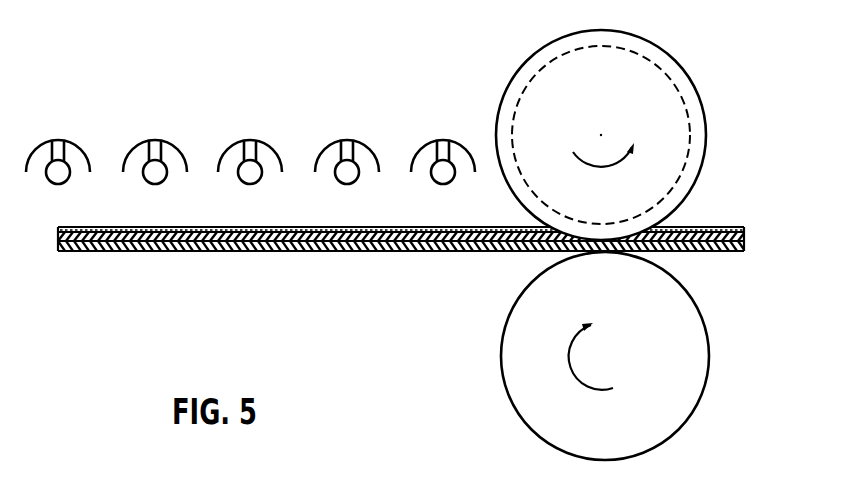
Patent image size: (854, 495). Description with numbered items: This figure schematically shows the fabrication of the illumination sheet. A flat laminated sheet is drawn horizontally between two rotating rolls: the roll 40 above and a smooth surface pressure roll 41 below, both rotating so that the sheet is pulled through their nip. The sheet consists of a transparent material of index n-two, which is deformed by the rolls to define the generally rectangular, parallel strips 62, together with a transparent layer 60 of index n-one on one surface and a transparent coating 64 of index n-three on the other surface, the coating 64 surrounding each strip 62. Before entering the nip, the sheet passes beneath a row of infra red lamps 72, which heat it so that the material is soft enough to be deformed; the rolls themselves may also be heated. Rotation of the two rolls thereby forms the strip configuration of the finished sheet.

The roll 40 is at (703, 91).
The lower pressure roller 41 is at (704, 404).
The transparent layer 60 is at (744, 246).
The strips 62 is at (744, 233).
The transparent coating 64 is at (700, 227).
The heating lamps 72 is at (78, 146).